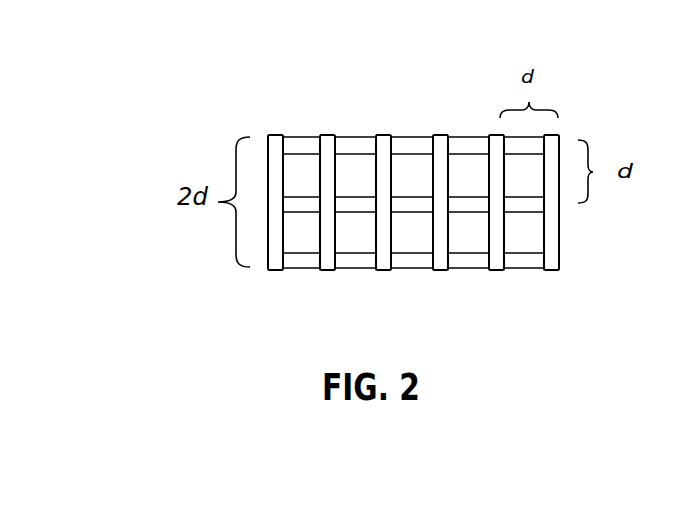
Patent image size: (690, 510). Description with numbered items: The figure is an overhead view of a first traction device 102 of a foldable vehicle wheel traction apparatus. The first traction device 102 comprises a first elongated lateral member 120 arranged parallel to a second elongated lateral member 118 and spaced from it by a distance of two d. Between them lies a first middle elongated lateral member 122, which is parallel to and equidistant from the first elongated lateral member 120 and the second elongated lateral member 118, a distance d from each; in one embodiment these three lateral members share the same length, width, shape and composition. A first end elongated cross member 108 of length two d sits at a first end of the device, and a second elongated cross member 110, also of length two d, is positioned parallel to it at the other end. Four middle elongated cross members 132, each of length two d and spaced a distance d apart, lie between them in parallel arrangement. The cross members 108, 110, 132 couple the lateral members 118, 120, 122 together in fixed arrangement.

The first traction device 102 is at (413, 199).
The first end elongated cross member 108 is at (268, 281).
The second elongated cross member 110 is at (560, 281).
The second elongated lateral member 118 is at (304, 127).
The first elongated lateral member 120 is at (301, 282).
The first middle elongated lateral member 122 is at (295, 186).
The middle elongated cross members 132 is at (485, 278).